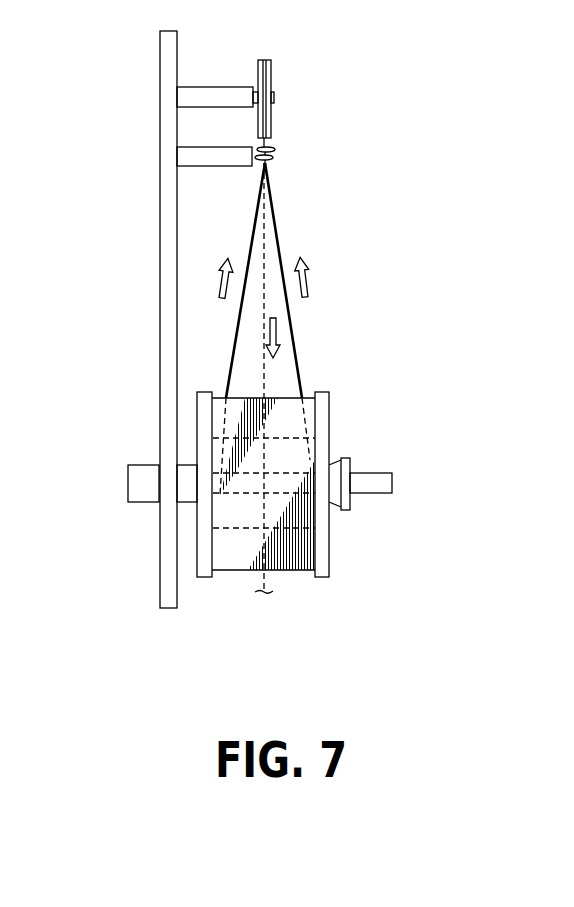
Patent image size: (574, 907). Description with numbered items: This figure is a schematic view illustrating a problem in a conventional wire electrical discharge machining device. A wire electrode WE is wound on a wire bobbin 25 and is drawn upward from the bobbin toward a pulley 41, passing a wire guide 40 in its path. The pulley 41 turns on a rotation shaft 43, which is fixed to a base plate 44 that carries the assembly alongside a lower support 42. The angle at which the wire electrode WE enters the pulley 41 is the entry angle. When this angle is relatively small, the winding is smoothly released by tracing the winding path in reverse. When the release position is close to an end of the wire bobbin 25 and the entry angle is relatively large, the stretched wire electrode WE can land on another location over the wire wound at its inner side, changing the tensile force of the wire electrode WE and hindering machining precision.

The wire bobbin 25 is at (330, 410).
The wire guide 40 is at (277, 148).
The pulley 41 is at (272, 72).
The lower bracket 42 is at (213, 158).
The rotation shaft 43 is at (225, 95).
The base plate 44 is at (160, 190).
The wire electrode WE is at (265, 380).